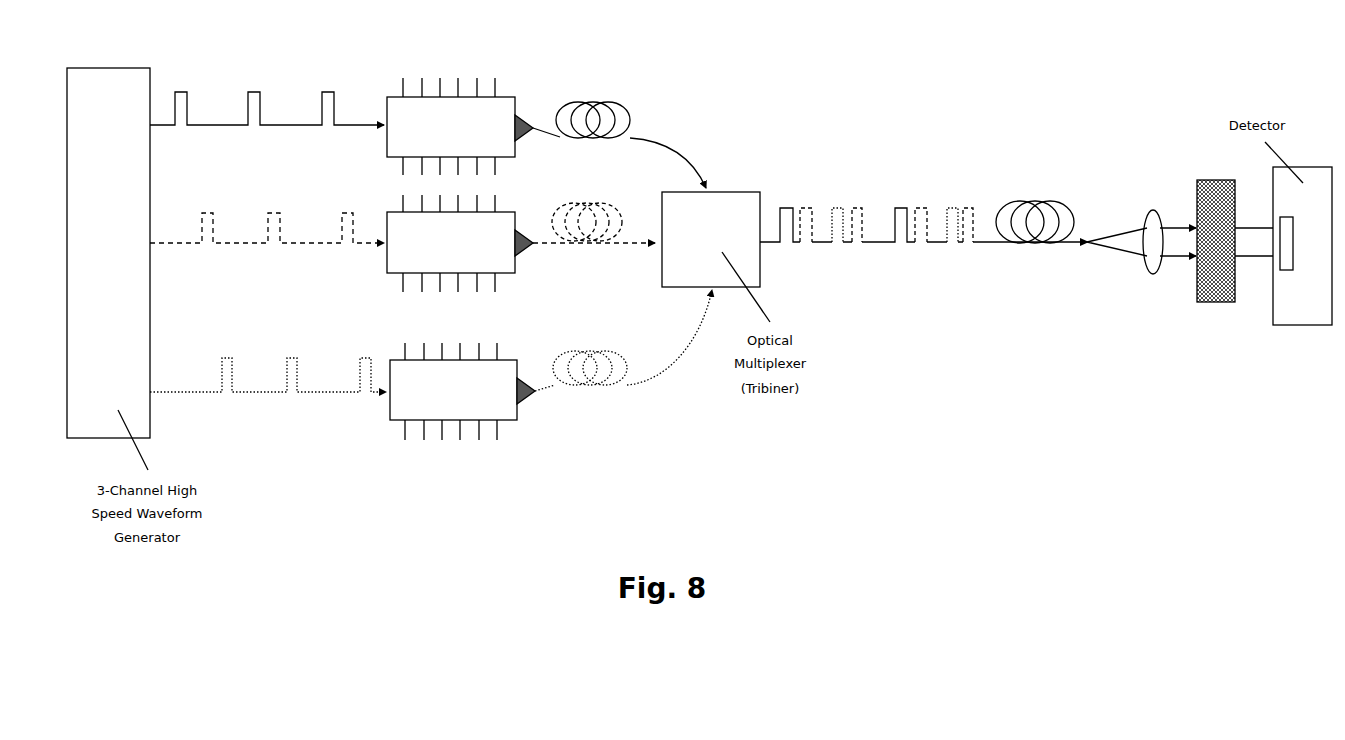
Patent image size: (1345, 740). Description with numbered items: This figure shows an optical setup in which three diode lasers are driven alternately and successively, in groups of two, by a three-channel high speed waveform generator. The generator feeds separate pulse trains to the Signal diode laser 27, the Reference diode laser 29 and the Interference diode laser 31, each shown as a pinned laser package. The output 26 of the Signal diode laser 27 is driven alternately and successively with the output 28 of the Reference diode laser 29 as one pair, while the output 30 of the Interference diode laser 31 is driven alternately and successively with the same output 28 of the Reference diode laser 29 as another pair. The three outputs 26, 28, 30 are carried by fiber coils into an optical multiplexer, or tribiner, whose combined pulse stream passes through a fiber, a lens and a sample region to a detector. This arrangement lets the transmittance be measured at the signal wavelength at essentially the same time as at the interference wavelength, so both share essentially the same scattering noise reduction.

The output of Signal diode laser 26 is at (612, 95).
The Signal diode laser 27 is at (467, 113).
The output of Reference diode laser 28 is at (578, 245).
The Reference diode laser 29 is at (413, 264).
The output of Interference diode laser 30 is at (623, 393).
The Interference diode laser 31 is at (412, 402).